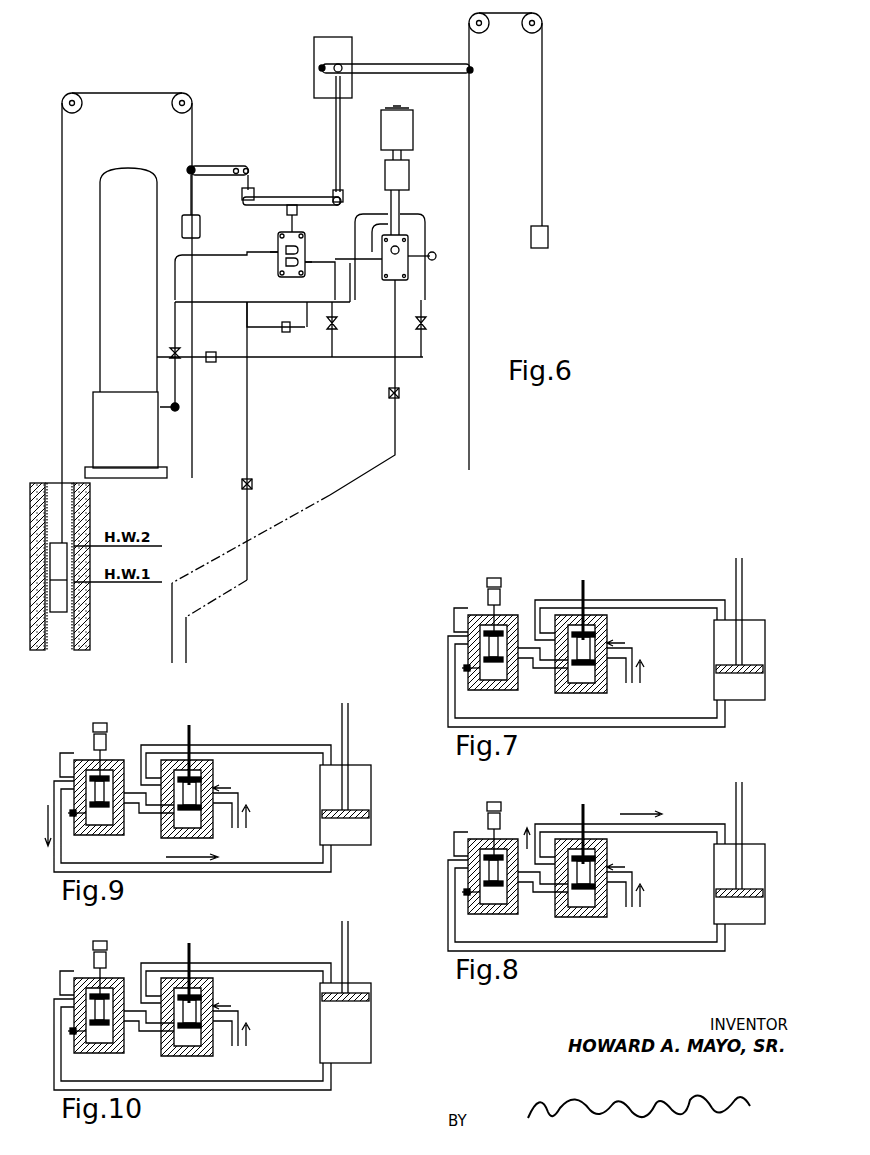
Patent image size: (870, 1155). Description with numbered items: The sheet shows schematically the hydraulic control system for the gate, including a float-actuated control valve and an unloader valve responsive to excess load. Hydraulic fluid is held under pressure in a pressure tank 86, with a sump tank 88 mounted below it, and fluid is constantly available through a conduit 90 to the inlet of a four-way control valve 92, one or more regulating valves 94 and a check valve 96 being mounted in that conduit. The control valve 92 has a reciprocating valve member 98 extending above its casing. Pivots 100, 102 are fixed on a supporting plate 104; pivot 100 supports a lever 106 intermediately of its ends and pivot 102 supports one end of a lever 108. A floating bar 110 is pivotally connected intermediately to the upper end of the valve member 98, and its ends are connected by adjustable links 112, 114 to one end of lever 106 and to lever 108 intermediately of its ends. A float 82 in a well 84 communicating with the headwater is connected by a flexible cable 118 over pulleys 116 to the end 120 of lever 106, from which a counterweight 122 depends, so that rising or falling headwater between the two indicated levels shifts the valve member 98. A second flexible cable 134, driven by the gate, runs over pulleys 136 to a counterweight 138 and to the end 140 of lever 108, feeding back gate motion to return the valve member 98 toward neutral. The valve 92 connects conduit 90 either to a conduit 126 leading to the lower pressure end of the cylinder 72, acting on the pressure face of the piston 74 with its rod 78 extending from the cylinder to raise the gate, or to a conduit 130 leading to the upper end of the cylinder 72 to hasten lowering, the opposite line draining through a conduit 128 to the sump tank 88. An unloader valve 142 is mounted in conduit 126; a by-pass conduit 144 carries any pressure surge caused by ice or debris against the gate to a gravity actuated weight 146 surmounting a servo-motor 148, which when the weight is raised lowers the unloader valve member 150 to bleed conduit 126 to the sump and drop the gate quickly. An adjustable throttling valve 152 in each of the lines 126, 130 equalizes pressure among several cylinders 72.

In FIG. 7, the cylinder 72 is at (760, 637).
In FIG. 8, the cylinder 72 is at (753, 882).
In FIG. 9, the cylinder 72 is at (359, 805).
In FIG. 10, the cylinder 72 is at (359, 1023).
In FIG. 7, the piston 74 is at (750, 668).
In FIG. 8, the piston 74 is at (754, 884).
In FIG. 9, the piston 74 is at (360, 790).
In FIG. 10, the piston 74 is at (360, 1005).
In FIG. 7, the piston rod 78 is at (743, 600).
In FIG. 8, the piston rod 78 is at (754, 835).
In FIG. 9, the piston rod 78 is at (360, 756).
In FIG. 10, the piston rod 78 is at (360, 957).
In FIG. 6, the float 82 is at (62, 548).
In FIG. 6, the well 84 is at (48, 484).
In FIG. 6, the pressure tank 86 is at (112, 252).
In FIG. 6, the sump tank 88 is at (148, 446).
In FIG. 6, the conduit 90 is at (425, 232).
In FIG. 7, the conduit 90 is at (515, 604).
In FIG. 8, the conduit 90 is at (591, 850).
In FIG. 9, the conduit 90 is at (197, 771).
In FIG. 10, the conduit 90 is at (243, 1017).
In FIG. 6, the four-way control valve 92 is at (278, 238).
In FIG. 7, the four-way control valve 92 is at (607, 626).
In FIG. 8, the four-way control valve 92 is at (598, 876).
In FIG. 9, the four-way control valve 92 is at (204, 797).
In FIG. 10, the four-way control valve 92 is at (204, 1015).
In FIG. 6, the regulating valve 94 is at (177, 350).
In FIG. 6, the check valve 96 is at (284, 328).
In FIG. 6, the reciprocating valve member 98 is at (300, 224).
In FIG. 7, the reciprocating valve member 98 is at (585, 625).
In FIG. 8, the reciprocating valve member 98 is at (604, 826).
In FIG. 9, the reciprocating valve member 98 is at (188, 744).
In FIG. 10, the reciprocating valve member 98 is at (206, 1010).
In FIG. 6, the pivot 100 is at (238, 166).
In FIG. 6, the pivot 102 is at (318, 70).
In FIG. 6, the supporting plate 104 is at (338, 38).
In FIG. 6, the lever 106 is at (207, 165).
In FIG. 6, the lever 108 is at (380, 64).
In FIG. 6, the floating bar 110 is at (274, 196).
In FIG. 6, the adjustable link 112 is at (256, 178).
In FIG. 6, the adjustable link 114 is at (334, 128).
In FIG. 6, the pulleys 116 is at (172, 102).
In FIG. 6, the flexible cable 118 is at (105, 92).
In FIG. 6, the end of lever 120 is at (189, 168).
In FIG. 6, the counterweight 122 is at (198, 228).
In FIG. 6, the conduit 126 is at (372, 304).
In FIG. 7, the conduit 126 is at (533, 672).
In FIG. 8, the conduit 126 is at (586, 914).
In FIG. 9, the conduit 126 is at (188, 835).
In FIG. 10, the conduit 126 is at (192, 1053).
In FIG. 6, the conduit 128 is at (178, 262).
In FIG. 6, the conduit 130 is at (248, 450).
In FIG. 7, the conduit 130 is at (690, 600).
In FIG. 8, the conduit 130 is at (630, 820).
In FIG. 9, the conduit 130 is at (236, 753).
In FIG. 10, the conduit 130 is at (236, 973).
In FIG. 6, the flexible cable 134 is at (470, 188).
In FIG. 6, the pulleys 136 is at (528, 34).
In FIG. 6, the counterweight 138 is at (548, 238).
In FIG. 6, the end of lever 140 is at (474, 72).
In FIG. 6, the unloader valve 142 is at (408, 270).
In FIG. 7, the unloader valve 142 is at (476, 615).
In FIG. 8, the unloader valve 142 is at (479, 858).
In FIG. 9, the unloader valve 142 is at (85, 779).
In FIG. 10, the unloader valve 142 is at (85, 997).
In FIG. 7, the by-pass conduit 144 is at (454, 618).
In FIG. 8, the by-pass conduit 144 is at (443, 841).
In FIG. 9, the by-pass conduit 144 is at (49, 762).
In FIG. 10, the by-pass conduit 144 is at (49, 980).
In FIG. 6, the weight 146 is at (404, 132).
In FIG. 7, the weight 146 is at (494, 578).
In FIG. 8, the weight 146 is at (504, 788).
In FIG. 9, the weight 146 is at (110, 709).
In FIG. 10, the weight 146 is at (110, 927).
In FIG. 6, the servo-motor 148 is at (400, 182).
In FIG. 7, the servo-motor 148 is at (500, 596).
In FIG. 8, the servo-motor 148 is at (515, 818).
In FIG. 9, the servo-motor 148 is at (121, 739).
In FIG. 10, the servo-motor 148 is at (121, 957).
In FIG. 7, the unloader valve member 150 is at (494, 670).
In FIG. 8, the unloader valve member 150 is at (479, 911).
In FIG. 9, the unloader valve member 150 is at (85, 832).
In FIG. 10, the unloader valve member 150 is at (85, 1050).
In FIG. 6, the adjustable throttling valve 152 is at (389, 398).